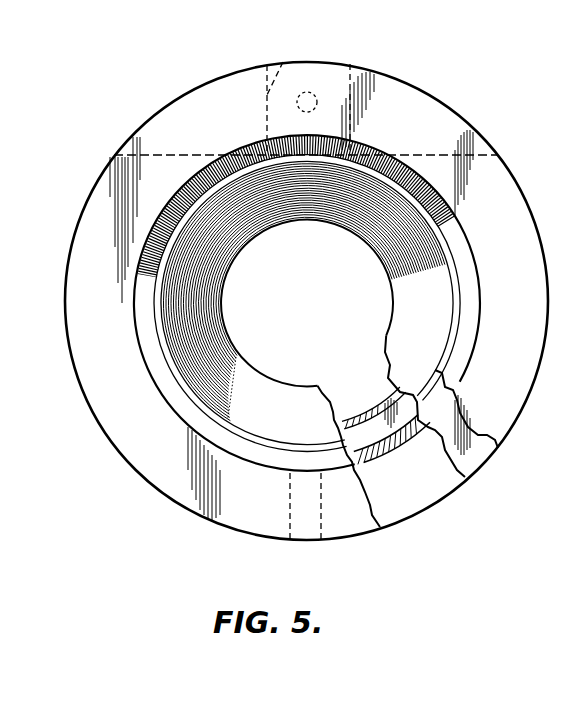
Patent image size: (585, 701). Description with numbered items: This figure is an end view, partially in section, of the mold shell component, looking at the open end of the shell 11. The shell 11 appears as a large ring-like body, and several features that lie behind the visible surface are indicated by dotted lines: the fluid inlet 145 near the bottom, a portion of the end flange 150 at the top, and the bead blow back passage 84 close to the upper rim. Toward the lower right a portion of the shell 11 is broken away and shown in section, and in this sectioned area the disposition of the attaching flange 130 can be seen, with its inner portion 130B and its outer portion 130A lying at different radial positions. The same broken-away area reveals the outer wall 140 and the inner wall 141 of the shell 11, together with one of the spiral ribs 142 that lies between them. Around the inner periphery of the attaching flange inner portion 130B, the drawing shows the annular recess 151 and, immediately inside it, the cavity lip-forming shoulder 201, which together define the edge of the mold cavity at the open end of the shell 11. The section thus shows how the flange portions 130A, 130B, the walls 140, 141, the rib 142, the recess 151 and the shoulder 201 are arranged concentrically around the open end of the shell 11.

The shell 11 is at (98, 141).
The bead blow back passage 84 is at (300, 107).
The attaching flange 130 is at (178, 511).
The outer portion 130A is at (480, 455).
The inner portion 130B is at (498, 411).
The outer wall 140 is at (426, 431).
The inner wall 141 is at (227, 395).
The spiral rib 142 is at (381, 434).
The fluid inlet 145 is at (290, 503).
The end flange 150 is at (283, 62).
The annular recess 151 is at (463, 287).
The cavity lip-forming shoulder 201 is at (453, 262).